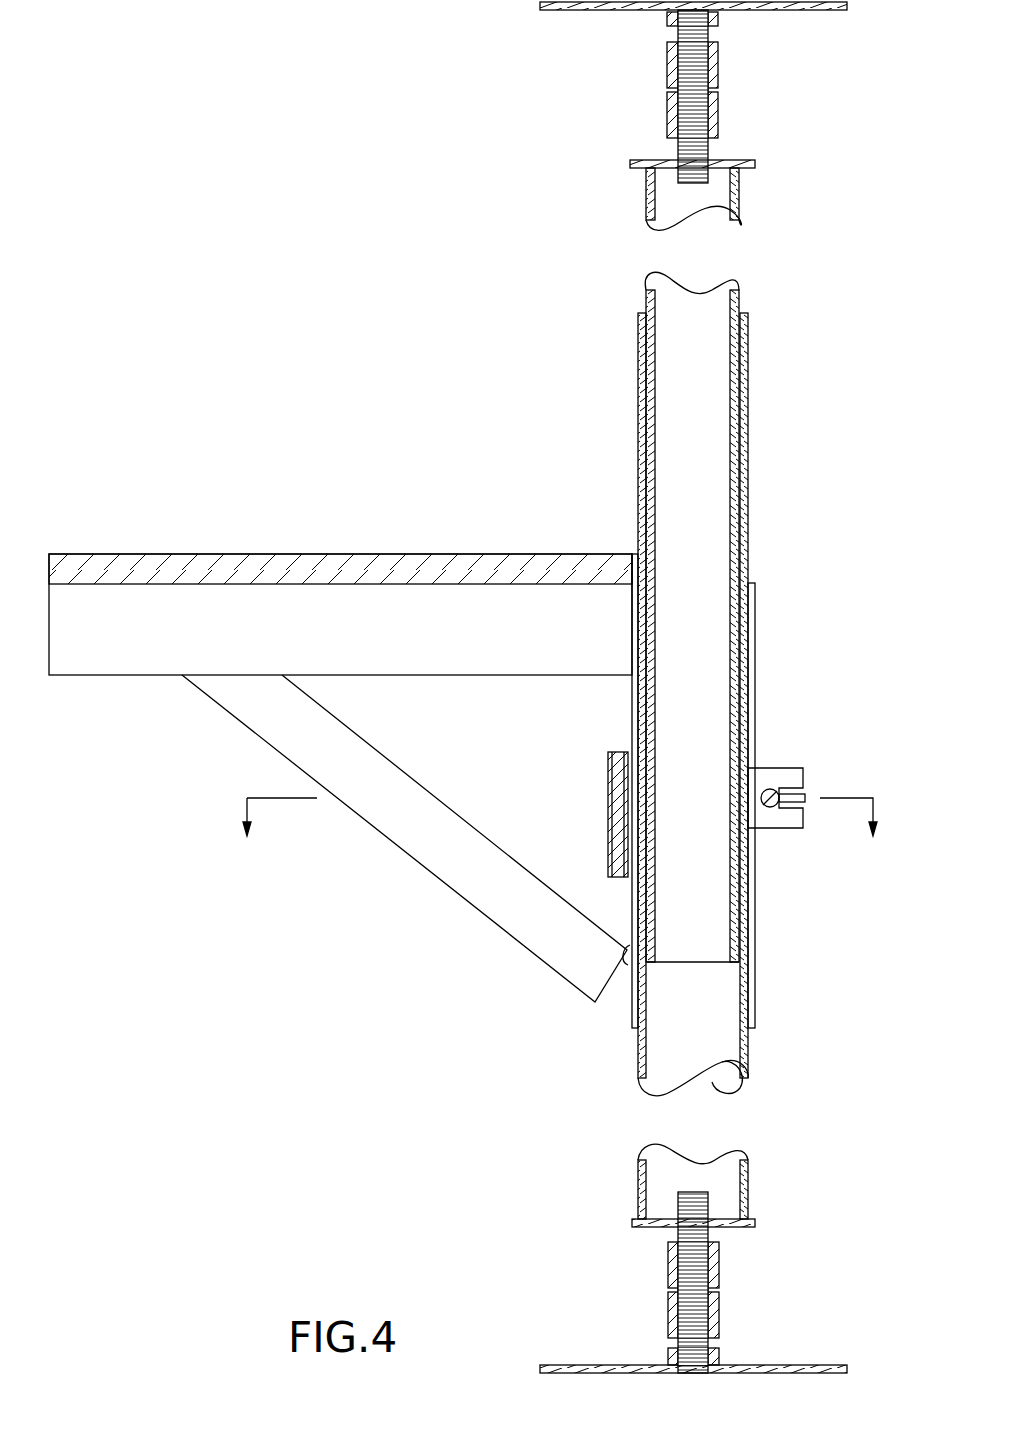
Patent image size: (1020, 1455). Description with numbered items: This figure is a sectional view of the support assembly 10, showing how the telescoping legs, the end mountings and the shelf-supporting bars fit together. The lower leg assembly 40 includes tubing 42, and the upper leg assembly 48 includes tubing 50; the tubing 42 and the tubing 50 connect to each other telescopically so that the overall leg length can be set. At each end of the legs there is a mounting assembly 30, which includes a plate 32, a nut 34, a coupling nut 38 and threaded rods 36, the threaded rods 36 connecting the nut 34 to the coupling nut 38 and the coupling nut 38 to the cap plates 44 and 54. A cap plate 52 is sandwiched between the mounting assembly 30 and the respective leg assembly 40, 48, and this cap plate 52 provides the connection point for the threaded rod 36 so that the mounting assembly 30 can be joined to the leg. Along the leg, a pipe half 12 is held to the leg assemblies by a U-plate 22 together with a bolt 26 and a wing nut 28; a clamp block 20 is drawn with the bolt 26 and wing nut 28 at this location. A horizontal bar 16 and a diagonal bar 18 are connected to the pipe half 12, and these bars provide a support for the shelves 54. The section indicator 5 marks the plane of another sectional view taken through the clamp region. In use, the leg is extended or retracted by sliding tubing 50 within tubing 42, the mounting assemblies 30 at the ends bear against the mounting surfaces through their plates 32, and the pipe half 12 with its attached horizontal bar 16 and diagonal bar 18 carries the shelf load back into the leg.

The section line 5- 5 is at (561, 832).
The mounting bracket assembly 10 is at (318, 910).
The pipe half 12 is at (752, 660).
The horizontal bar 16 is at (128, 655).
The diagonal bar 18 is at (500, 900).
The clamp block 20 is at (782, 775).
The U-plate 22 is at (608, 815).
The bolt 26 is at (770, 808).
The wing nut 28 is at (806, 798).
The mounting assembly 30 is at (505, 86).
The plate 32 is at (602, 8).
The nut 34 is at (716, 19).
The threaded rod 36 is at (690, 46).
The coupling nut 38 is at (712, 90).
The lower leg assembly 40 is at (788, 1135).
The tubing 42 is at (748, 346).
The cap plate 44 is at (632, 1223).
The upper leg assembly 48 is at (608, 258).
The tubing 50 is at (742, 192).
The cap plate 52 is at (630, 165).
The cap plate 54 is at (303, 560).